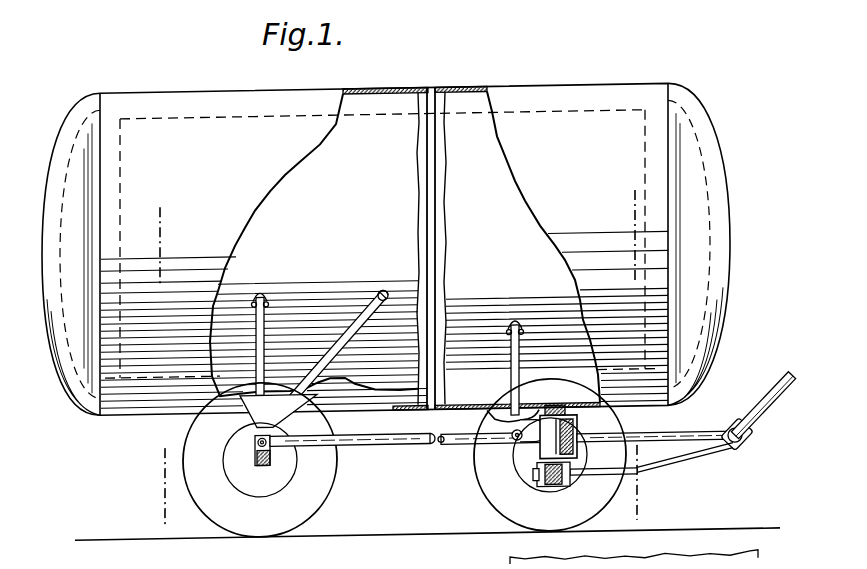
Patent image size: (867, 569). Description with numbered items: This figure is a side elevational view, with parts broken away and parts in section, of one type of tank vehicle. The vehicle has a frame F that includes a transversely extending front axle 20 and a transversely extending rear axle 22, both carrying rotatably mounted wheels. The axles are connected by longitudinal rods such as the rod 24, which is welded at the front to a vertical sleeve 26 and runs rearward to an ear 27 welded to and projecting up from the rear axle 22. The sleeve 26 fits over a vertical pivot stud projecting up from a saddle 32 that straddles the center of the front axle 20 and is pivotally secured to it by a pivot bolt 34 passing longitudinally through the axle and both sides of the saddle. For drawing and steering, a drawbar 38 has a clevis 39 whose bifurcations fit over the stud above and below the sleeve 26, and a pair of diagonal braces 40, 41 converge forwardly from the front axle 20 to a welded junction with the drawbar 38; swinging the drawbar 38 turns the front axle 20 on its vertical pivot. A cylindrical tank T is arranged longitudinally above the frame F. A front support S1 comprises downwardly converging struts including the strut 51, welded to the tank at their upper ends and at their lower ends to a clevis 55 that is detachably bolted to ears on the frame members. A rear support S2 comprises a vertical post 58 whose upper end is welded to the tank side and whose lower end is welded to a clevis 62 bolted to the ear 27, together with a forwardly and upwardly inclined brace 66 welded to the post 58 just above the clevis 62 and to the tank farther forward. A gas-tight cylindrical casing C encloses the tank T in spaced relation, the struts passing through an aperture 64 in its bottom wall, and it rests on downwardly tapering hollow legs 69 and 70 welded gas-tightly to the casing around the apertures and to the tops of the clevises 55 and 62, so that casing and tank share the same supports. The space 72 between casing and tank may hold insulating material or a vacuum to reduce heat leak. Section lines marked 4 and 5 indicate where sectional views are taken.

The cylindrical casing C is at (176, 98).
The cylindrical tank T is at (296, 195).
The space 72 is at (392, 100).
The front support S1 is at (498, 397).
The rear support S2 is at (293, 298).
The vertical post 58 is at (256, 333).
The inclined brace 66 is at (350, 338).
The rear leg 70 is at (247, 424).
The clevis 62 is at (256, 447).
The ear 27 is at (257, 461).
The rear axle 22 is at (262, 473).
The rod 24 is at (327, 452).
The frame F is at (389, 453).
The strut 51 is at (522, 375).
The front leg 69 is at (489, 426).
The clevis 55 is at (521, 449).
The aperture 64 is at (533, 418).
The vertical sleeve 26 is at (568, 434).
The clevis 39 is at (580, 448).
The drawbar 38 is at (678, 448).
The diagonal brace 40 is at (686, 459).
The diagonal brace 41 is at (600, 487).
The pivot bolt 34 is at (543, 488).
The saddle 32 is at (538, 477).
The front axle 20 is at (555, 497).
The section line 4 is at (639, 231).
The section line 5 is at (157, 233).